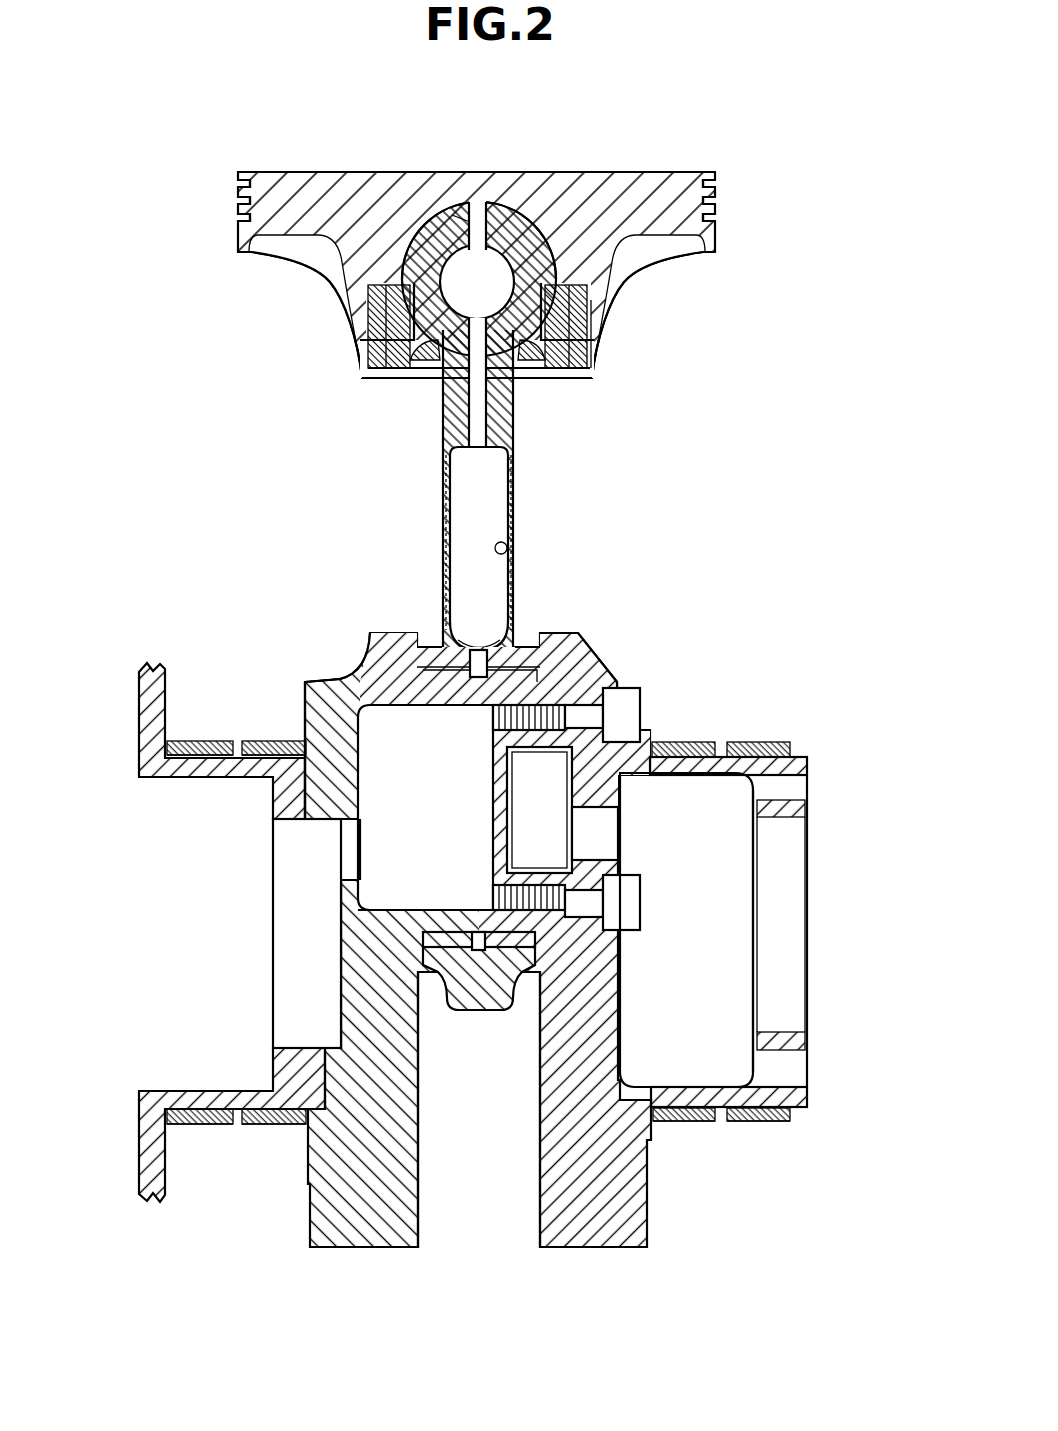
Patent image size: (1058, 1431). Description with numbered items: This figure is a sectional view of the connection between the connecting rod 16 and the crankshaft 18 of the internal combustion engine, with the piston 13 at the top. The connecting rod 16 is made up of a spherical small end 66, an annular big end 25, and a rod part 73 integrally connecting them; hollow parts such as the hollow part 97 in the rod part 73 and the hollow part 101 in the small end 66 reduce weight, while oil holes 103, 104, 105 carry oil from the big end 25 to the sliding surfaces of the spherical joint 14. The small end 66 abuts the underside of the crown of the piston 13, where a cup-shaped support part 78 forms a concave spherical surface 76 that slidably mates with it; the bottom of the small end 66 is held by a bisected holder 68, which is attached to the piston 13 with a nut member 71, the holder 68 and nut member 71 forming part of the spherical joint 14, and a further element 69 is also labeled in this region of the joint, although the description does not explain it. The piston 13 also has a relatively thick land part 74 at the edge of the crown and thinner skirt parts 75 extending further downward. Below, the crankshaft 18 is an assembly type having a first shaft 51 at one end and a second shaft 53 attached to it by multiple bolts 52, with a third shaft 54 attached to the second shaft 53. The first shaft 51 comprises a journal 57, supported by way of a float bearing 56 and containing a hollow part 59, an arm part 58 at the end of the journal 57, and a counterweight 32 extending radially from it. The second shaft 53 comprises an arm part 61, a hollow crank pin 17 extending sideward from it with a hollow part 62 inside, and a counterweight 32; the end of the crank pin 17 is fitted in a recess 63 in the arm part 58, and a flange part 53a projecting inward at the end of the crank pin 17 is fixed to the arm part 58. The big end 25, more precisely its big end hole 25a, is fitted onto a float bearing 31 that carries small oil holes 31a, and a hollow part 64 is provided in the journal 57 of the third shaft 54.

The piston 13 is at (484, 275).
The land part 74 is at (720, 190).
The spherical joint 14 is at (537, 218).
The spherical seat 69 is at (563, 268).
The concave spherical surface 76 is at (452, 220).
The oil hole 105 is at (478, 205).
The hollow part 101 is at (447, 268).
The cup-shaped support part 78 is at (385, 292).
The holder 68 is at (583, 288).
The skirt part 75 is at (592, 322).
The nut member 71 is at (560, 366).
The small end 66 is at (535, 352).
The connecting rod 16 is at (419, 356).
The rod part 73 is at (444, 488).
The oil hole 104 is at (478, 450).
The hollow part 97 is at (507, 548).
The oil hole 103 is at (468, 648).
The crank pin 17 is at (507, 927).
The big end hole 25a is at (410, 682).
The second shaft 53 is at (315, 663).
The arm part 58 is at (590, 645).
The crankshaft 18 is at (629, 663).
The arm part 61 is at (305, 690).
The first shaft 51 is at (770, 866).
The bolt 52 is at (641, 715).
The small oil hole 31a is at (452, 706).
The flange part 53a is at (500, 738).
The hollow part 62 is at (413, 912).
The float bearing 31 is at (452, 1012).
The recess 63 is at (513, 1012).
The big end 25 is at (480, 1012).
The third shaft 54 is at (472, 942).
The journal 57 is at (221, 1102).
The hollow part 64 is at (169, 1082).
The float bearing 56 is at (198, 1127).
The hollow part 59 is at (690, 1085).
The counterweight 32 is at (358, 1230).